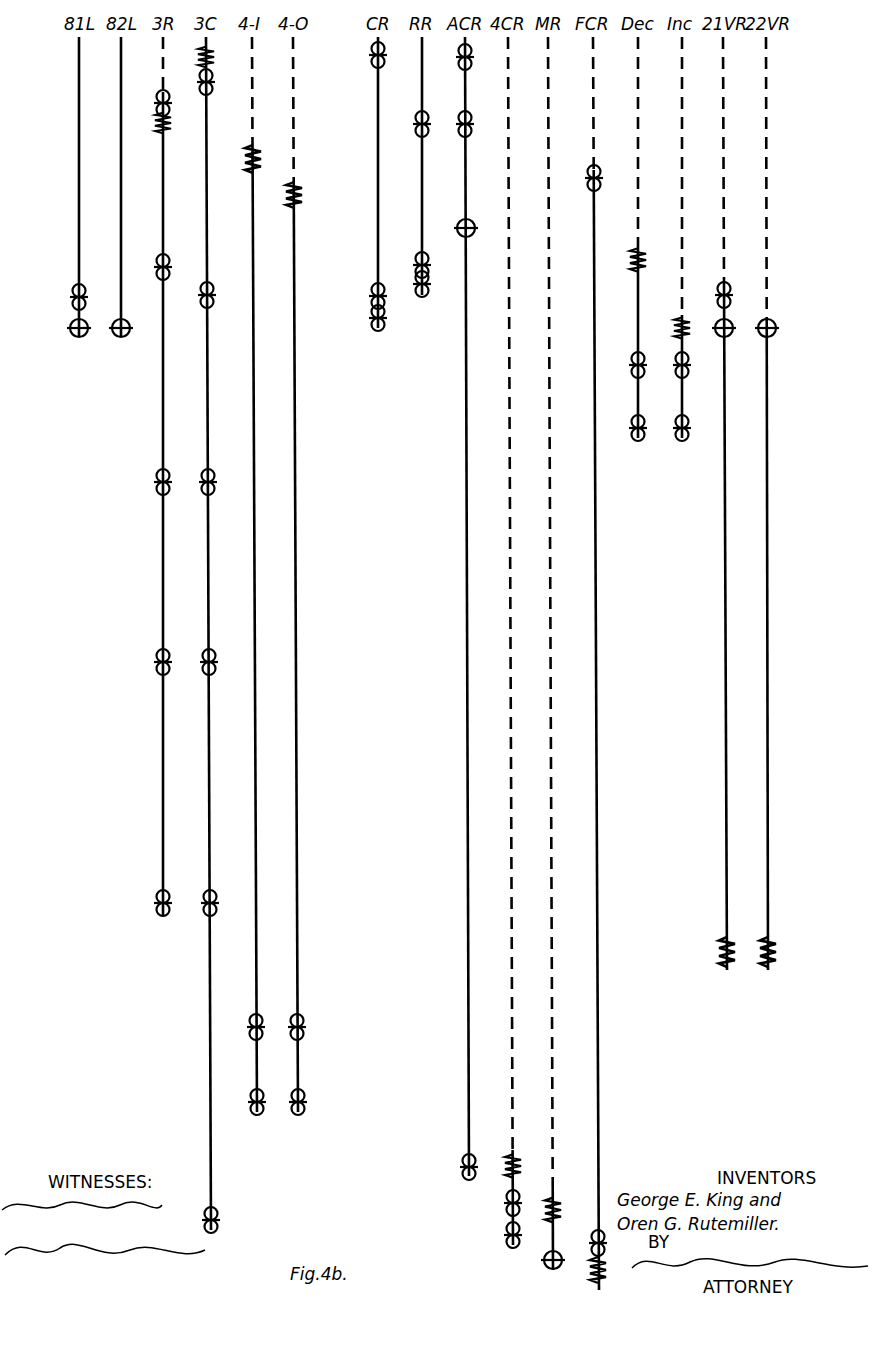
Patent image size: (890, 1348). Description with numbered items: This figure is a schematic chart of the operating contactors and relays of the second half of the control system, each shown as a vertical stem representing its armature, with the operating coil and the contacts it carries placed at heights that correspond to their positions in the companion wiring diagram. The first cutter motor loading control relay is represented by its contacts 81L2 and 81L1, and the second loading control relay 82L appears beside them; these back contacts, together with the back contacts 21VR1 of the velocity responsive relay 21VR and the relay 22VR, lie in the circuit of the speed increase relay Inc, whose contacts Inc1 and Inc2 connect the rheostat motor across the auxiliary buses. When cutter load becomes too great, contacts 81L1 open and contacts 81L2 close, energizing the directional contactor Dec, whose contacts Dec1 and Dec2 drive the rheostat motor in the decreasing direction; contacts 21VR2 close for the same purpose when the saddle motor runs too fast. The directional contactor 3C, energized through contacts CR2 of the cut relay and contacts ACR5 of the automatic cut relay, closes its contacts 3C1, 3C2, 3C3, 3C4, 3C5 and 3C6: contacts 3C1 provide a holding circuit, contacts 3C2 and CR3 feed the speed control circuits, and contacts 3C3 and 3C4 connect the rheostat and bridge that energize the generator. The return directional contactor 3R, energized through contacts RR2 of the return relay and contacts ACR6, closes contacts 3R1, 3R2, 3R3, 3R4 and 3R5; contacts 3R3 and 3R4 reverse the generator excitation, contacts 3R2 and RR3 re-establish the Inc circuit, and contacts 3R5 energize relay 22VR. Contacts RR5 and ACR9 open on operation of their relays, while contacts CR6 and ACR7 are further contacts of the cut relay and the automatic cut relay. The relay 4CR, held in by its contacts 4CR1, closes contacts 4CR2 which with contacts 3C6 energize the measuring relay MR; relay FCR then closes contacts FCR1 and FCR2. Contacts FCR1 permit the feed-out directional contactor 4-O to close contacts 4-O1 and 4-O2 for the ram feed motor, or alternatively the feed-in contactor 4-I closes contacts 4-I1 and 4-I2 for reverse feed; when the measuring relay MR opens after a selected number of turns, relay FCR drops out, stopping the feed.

The contacts of cutter motor loading control relay 81L 81L2 is at (70, 296).
The back contacts of cutter motor loading control relay 81L 81L1 is at (70, 336).
The cutter motor loading control relay 82L is at (118, 338).
The contacts of return directional contactor 3R 3R1 is at (155, 104).
The return directional contactor 3R is at (166, 132).
The contacts of return directional contactor 3R 3R2 is at (158, 274).
The contacts of return directional contactor 3R 3R4 is at (155, 486).
The contacts of return directional contactor 3R 3R3 is at (155, 666).
The contacts of return directional contactor 3R 3R5 is at (155, 902).
The directional contactor 3C is at (212, 66).
The contacts of directional contactor 3C 3C1 is at (213, 88).
The contacts of directional contactor 3C 3C2 is at (213, 302).
The contacts of directional contactor 3C 3C3 is at (214, 490).
The contacts of directional contactor 3C 3C4 is at (215, 670).
The contacts of directional contactor 3C 3C5 is at (204, 913).
The contacts of directional contactor 3C 3C6 is at (219, 1227).
The directional contactor 4-I is at (258, 152).
The contact members of directional contactor 4-I 4-I1 is at (249, 1024).
The contact members of directional contactor 4-I 4-I2 is at (255, 1114).
The directional contactor 4-O is at (300, 196).
The contacts of directional contactor 4-O 4-O2 is at (304, 1027).
The contacts of directional contactor 4-O 4-O1 is at (298, 1112).
The contacts of cut relay CR CR2 is at (371, 60).
The contacts of cut relay CR CR6 is at (370, 298).
The contacts of cut relay CR CR3 is at (377, 327).
The contacts of return relay RR RR2 is at (414, 120).
The contacts of return relay RR RR5 is at (414, 260).
The contacts of return relay RR RR3 is at (421, 292).
The contacts of relay ACR ACR5 is at (472, 63).
The contacts of relay ACR ACR6 is at (472, 130).
The contacts of relay ACR ACR9 is at (476, 232).
The contacts of relay ACR ACR7 is at (460, 1172).
The relay 4CR is at (518, 1168).
The contacts of relay 4CR 4CR1 is at (505, 1205).
The contacts of relay 4CR 4CR2 is at (505, 1242).
The measuring relay MR is at (558, 1206).
The contact members of relay FCR FCR1 is at (600, 187).
The contact members of relay FCR FCR2 is at (590, 1250).
The relay FCR is at (590, 1278).
The directional contactor Dec is at (644, 258).
The contacts of directional contactor Dec Dec1 is at (630, 362).
The contact members of directional contactor Dec Dec2 is at (634, 437).
The speed increase relay Inc is at (676, 326).
The contacts of directional contactor Inc Inc2 is at (677, 374).
The contacts of directional contactor Inc Inc1 is at (680, 438).
The contacts of velocity responsive relay 21VR 21VR2 is at (730, 290).
The contacts of velocity responsive relay 21VR 21VR1 is at (732, 322).
The velocity responsive relay 21VR is at (718, 953).
The velocity responsive relay 22VR is at (774, 336).